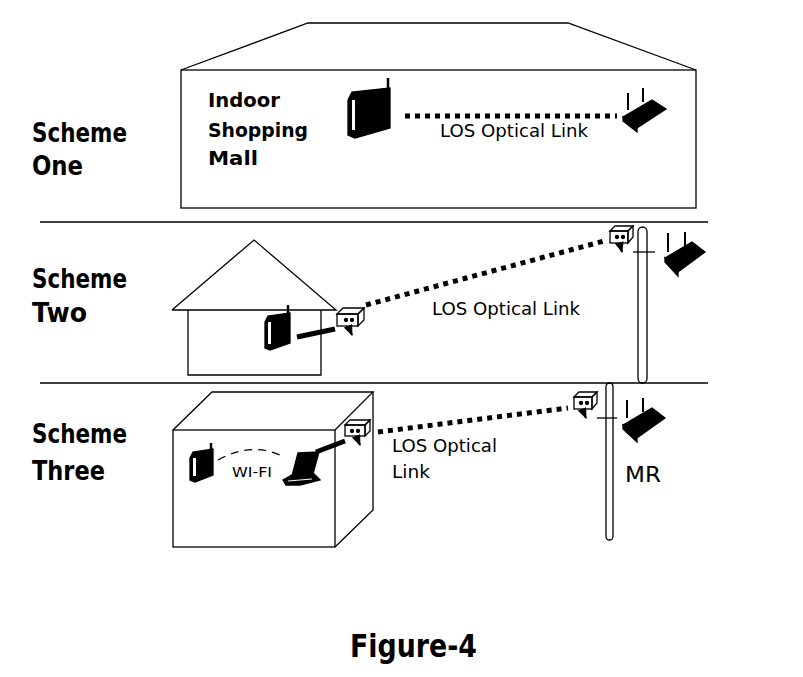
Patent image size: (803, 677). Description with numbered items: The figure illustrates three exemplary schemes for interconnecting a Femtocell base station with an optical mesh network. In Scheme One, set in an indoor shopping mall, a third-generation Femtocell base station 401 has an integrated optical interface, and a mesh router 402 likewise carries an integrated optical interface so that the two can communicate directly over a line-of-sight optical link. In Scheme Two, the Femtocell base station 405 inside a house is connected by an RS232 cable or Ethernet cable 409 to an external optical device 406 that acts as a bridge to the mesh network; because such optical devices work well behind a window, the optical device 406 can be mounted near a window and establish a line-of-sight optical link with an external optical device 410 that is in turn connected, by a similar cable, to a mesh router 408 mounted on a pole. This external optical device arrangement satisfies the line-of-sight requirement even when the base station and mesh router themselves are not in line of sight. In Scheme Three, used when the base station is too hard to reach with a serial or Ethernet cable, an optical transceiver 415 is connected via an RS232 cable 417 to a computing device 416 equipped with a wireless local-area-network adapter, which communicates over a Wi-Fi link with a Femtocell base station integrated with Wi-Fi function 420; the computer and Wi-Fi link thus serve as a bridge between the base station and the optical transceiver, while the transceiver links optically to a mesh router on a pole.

The Femtocell base station F-BS with integrated optical interface 401 is at (374, 141).
The mesh router 402 is at (644, 146).
The F-BS 405 is at (253, 340).
The external optical device 406 is at (353, 305).
The mesh router 408 is at (701, 271).
The RS232 cable or Ethernet cable 409 is at (327, 342).
The external optical device 410 is at (611, 261).
The optical transceiver 415 is at (358, 469).
The computing device 416 is at (294, 497).
The RS232 cable 417 is at (331, 460).
The Femtocell base station integrated with Wi-Fi function 420 is at (204, 512).